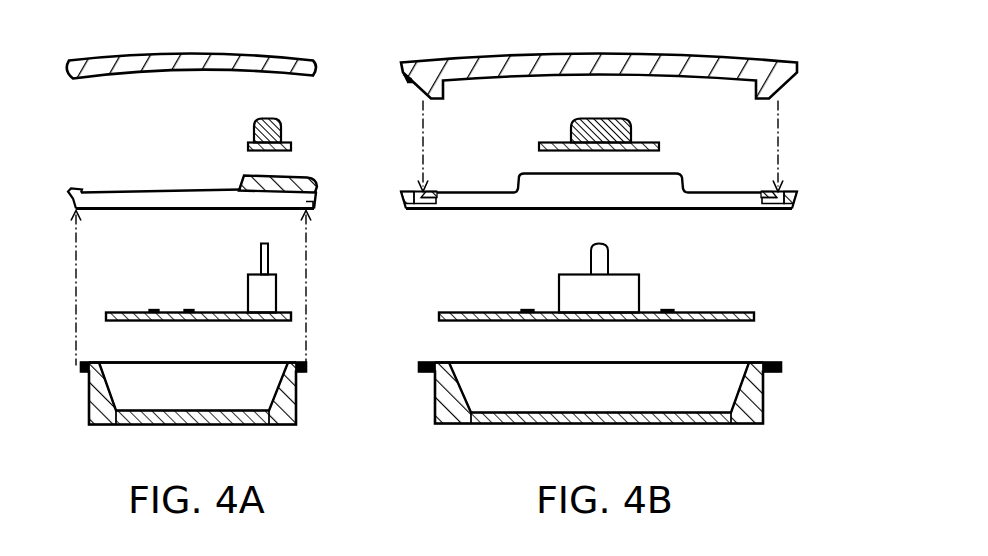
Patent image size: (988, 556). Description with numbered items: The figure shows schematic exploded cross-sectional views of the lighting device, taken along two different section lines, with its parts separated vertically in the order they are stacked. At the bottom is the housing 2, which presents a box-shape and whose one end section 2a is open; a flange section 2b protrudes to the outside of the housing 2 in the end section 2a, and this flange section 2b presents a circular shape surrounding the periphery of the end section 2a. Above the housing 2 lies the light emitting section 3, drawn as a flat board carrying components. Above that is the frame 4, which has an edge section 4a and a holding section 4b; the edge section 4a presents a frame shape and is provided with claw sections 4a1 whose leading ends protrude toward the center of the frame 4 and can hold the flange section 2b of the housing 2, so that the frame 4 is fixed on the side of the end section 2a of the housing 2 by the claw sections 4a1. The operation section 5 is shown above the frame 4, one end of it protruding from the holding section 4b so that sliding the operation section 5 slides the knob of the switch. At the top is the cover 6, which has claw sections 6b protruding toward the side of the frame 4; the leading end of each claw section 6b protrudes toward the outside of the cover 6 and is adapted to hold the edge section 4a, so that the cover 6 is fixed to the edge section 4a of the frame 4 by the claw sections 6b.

In FIG. 4A, the housing 2 is at (187, 388).
In FIG. 4B, the housing 2 is at (598, 388).
In FIG. 4A, the end section 2a is at (122, 352).
In FIG. 4B, the end section 2a is at (708, 350).
In FIG. 4A, the flange section 2b is at (80, 367).
In FIG. 4B, the flange section 2b is at (420, 366).
In FIG. 4A, the light emitting section 3 is at (298, 320).
In FIG. 4B, the light emitting section 3 is at (720, 296).
In FIG. 4A, the frame 4 is at (190, 230).
In FIG. 4B, the frame 4 is at (610, 188).
In FIG. 4B, the edge section 4a is at (405, 200).
In FIG. 4A, the claw section 4a1 is at (70, 212).
In FIG. 4A, the holding section 4b is at (243, 177).
In FIG. 4A, the operation section 5 is at (253, 132).
In FIG. 4B, the operation section 5 is at (628, 128).
In FIG. 4A, the cover 6 is at (221, 63).
In FIG. 4B, the cover 6 is at (590, 71).
In FIG. 4B, the claw section 6b is at (422, 84).